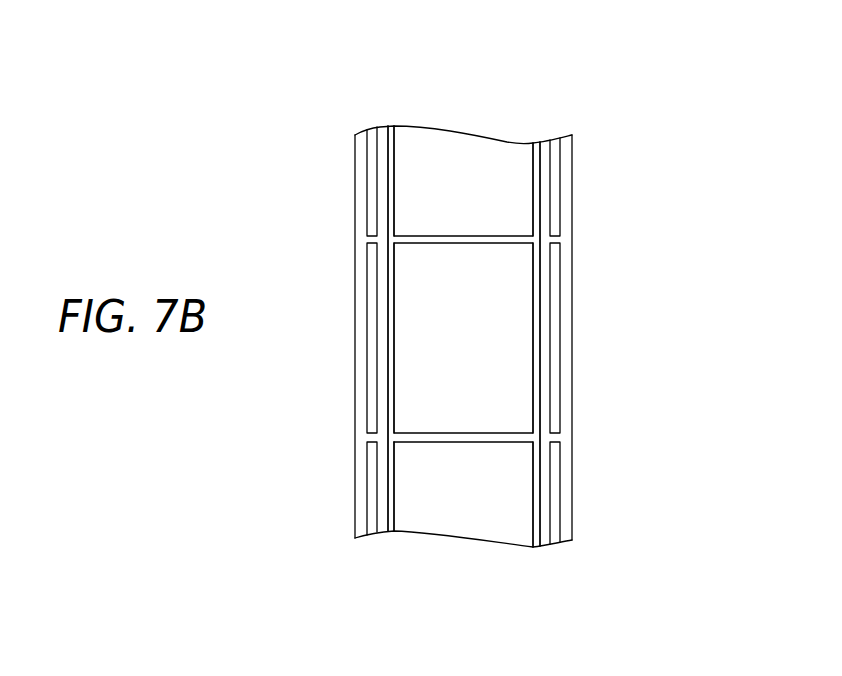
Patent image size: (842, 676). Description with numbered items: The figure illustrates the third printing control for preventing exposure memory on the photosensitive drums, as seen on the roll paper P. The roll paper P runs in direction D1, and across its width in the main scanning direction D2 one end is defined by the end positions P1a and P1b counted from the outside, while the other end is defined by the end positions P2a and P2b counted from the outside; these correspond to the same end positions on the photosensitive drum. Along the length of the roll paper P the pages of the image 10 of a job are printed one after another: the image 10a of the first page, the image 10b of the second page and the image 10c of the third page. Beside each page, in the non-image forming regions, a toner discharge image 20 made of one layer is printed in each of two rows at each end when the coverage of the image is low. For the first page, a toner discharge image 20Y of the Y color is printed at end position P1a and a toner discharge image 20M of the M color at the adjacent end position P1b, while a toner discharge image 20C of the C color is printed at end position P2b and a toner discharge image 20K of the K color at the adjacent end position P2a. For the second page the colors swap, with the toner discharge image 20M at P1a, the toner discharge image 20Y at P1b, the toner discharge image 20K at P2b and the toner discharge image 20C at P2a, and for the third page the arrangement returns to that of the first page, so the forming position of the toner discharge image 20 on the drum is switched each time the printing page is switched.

The roll paper P is at (353, 260).
The image 10 is at (539, 336).
The image of the first page 10a is at (515, 233).
The image of the second page 10b is at (515, 413).
The image of the third page 10c is at (515, 532).
The toner discharge image 20 is at (481, 336).
The toner discharge image of the Y color 20Y is at (373, 162).
The toner discharge image of the M color 20M is at (377, 205).
The toner discharge image of the C color 20C is at (556, 161).
The toner discharge image of the K color 20K is at (548, 204).
The end position P1a is at (376, 113).
The end position P1b is at (389, 113).
The end position P2a is at (561, 113).
The end position P2b is at (548, 113).
The direction D1 is at (327, 538).
The main scanning direction D2 is at (370, 597).